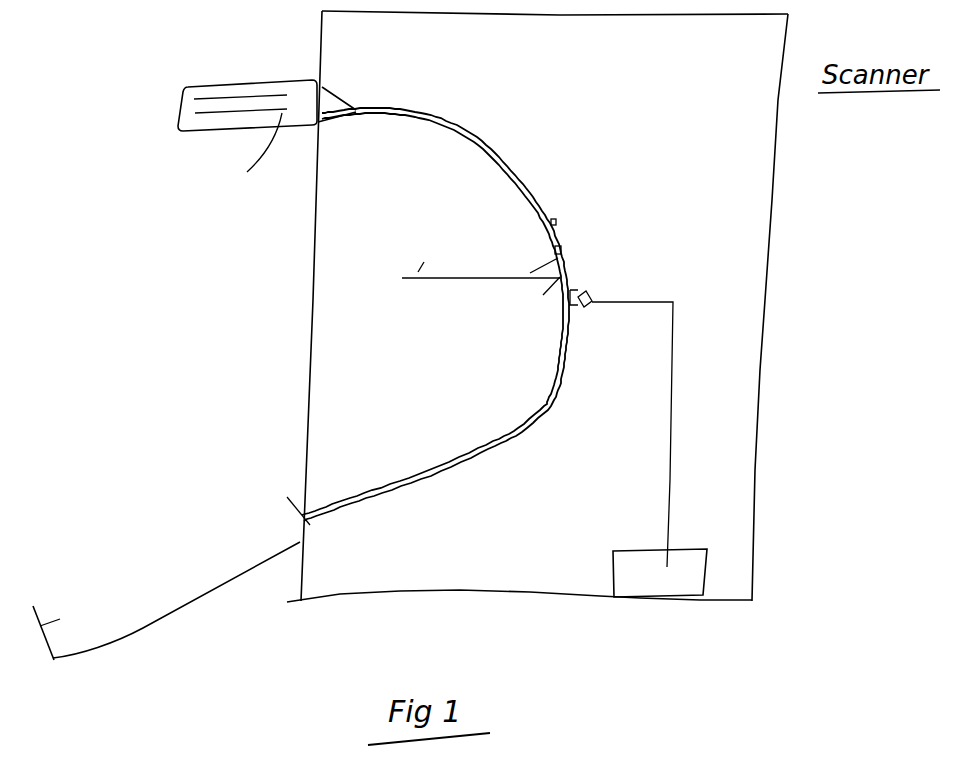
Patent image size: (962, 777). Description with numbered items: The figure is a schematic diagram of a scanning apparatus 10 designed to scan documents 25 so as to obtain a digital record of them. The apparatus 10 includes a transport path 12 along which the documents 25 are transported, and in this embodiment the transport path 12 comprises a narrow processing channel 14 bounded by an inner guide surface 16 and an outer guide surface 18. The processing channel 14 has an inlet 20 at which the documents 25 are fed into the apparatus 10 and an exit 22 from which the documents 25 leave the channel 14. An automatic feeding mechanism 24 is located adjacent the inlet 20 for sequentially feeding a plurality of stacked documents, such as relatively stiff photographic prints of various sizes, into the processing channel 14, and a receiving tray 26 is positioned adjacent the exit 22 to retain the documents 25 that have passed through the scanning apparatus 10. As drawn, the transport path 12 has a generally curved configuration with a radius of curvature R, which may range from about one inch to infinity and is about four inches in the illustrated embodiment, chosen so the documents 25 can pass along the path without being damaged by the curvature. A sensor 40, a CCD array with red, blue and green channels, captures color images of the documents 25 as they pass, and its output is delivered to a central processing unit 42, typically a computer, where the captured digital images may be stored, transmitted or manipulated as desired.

The scanning apparatus 10 is at (812, 318).
The transport path 12 is at (510, 160).
The processing channel 14 is at (566, 262).
The inner guide surface 16 is at (530, 273).
The outer guide surface 18 is at (556, 217).
The inlet 20 is at (320, 90).
The exit 22 is at (280, 496).
The automatic feeding mechanism 24 is at (240, 90).
The documents 25 is at (255, 161).
The receiving tray 26 is at (166, 601).
The sensor 40 is at (595, 293).
The central processing unit 42 is at (698, 549).